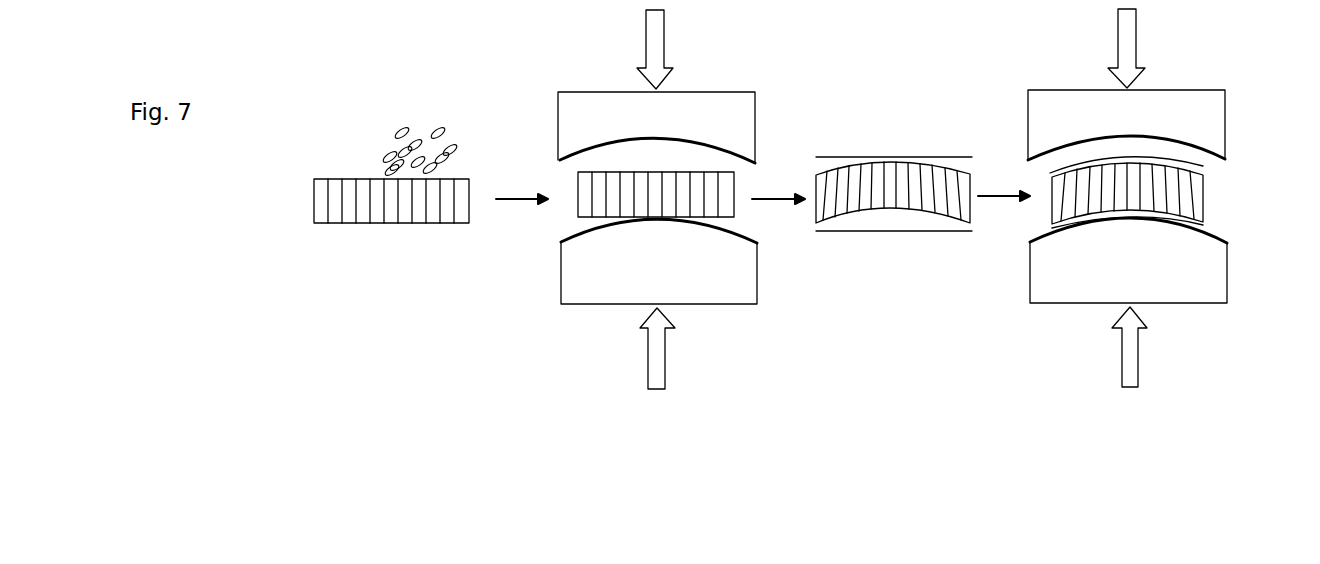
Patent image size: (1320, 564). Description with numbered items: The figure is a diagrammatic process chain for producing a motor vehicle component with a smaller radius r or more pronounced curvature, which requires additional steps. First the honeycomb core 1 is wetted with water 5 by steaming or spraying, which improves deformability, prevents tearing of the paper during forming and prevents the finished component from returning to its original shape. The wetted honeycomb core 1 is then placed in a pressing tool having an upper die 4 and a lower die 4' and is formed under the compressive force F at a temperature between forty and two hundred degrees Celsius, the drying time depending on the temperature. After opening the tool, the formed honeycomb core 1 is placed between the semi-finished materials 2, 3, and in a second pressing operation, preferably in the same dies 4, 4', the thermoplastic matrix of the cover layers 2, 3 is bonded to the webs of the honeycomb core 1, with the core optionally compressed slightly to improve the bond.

The honeycomb core 1 is at (345, 221).
The semi-finished material 2 is at (895, 158).
The semi-finished material 3 is at (902, 232).
The upper die 4 is at (919, 271).
The lower die 4' is at (918, 132).
The water 5 is at (399, 133).
The compressive force F is at (650, 47).
The radius r is at (1137, 228).